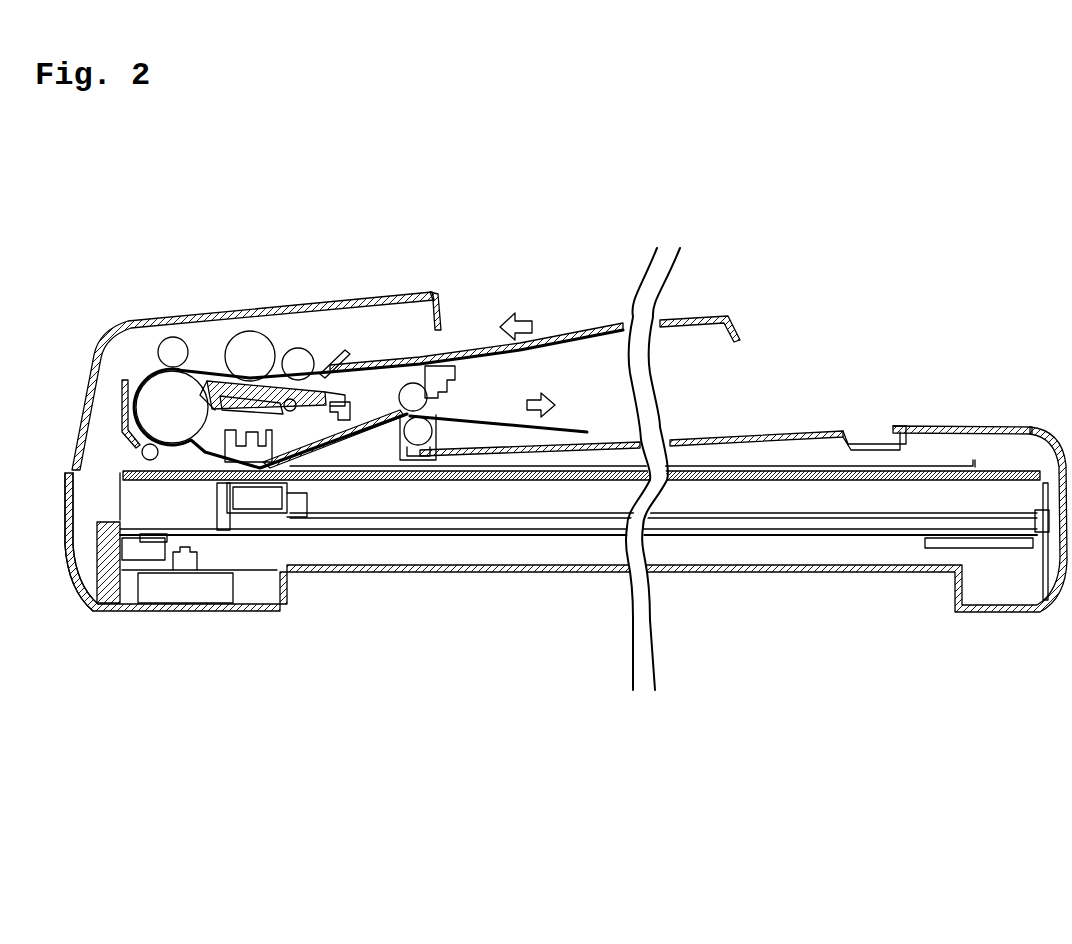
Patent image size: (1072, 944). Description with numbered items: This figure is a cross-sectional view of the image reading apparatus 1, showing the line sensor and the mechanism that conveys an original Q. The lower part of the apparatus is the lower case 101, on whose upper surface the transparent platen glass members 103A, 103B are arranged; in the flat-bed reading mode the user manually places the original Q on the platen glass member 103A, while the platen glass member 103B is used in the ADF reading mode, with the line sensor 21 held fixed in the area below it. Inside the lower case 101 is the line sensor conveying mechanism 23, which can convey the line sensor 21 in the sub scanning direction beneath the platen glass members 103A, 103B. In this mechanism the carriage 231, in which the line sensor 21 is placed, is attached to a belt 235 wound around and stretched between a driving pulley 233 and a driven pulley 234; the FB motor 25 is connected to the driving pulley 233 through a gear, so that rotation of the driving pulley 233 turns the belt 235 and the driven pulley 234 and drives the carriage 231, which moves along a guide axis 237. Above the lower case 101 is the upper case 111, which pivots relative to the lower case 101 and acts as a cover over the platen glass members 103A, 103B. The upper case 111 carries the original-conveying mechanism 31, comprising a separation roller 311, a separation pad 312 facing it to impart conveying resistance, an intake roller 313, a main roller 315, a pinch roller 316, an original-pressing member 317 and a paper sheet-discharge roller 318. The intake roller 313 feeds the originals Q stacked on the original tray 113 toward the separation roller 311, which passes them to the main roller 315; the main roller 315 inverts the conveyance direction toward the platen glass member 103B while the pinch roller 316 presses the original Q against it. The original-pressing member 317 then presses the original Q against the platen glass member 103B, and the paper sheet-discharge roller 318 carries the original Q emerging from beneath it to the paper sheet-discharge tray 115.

The image reading apparatus 1 is at (865, 300).
The original-conveying mechanism 31 is at (128, 366).
The separation roller 311 is at (250, 356).
The separation pad 312 is at (268, 390).
The intake roller 313 is at (304, 348).
The main roller 315 is at (168, 392).
The pinch roller 316 is at (173, 350).
The original-pressing member 317 is at (225, 447).
The paper sheet-discharge roller 318 is at (420, 378).
The upper case 111 is at (437, 297).
The original tray 113 is at (725, 320).
The paper sheet-discharge tray 115 is at (732, 440).
The lower case 101 is at (72, 560).
The platen glass member 103A is at (537, 480).
The platen glass member 103B is at (218, 492).
The line sensor 21 is at (263, 497).
The line sensor conveying mechanism 23 is at (368, 548).
The carriage 231 is at (305, 517).
The driving pulley 233 is at (140, 541).
The driven pulley 234 is at (955, 545).
The belt 235 is at (865, 532).
The guide axis 237 is at (770, 523).
The FB motor 25 is at (182, 592).
The original Q is at (548, 346).